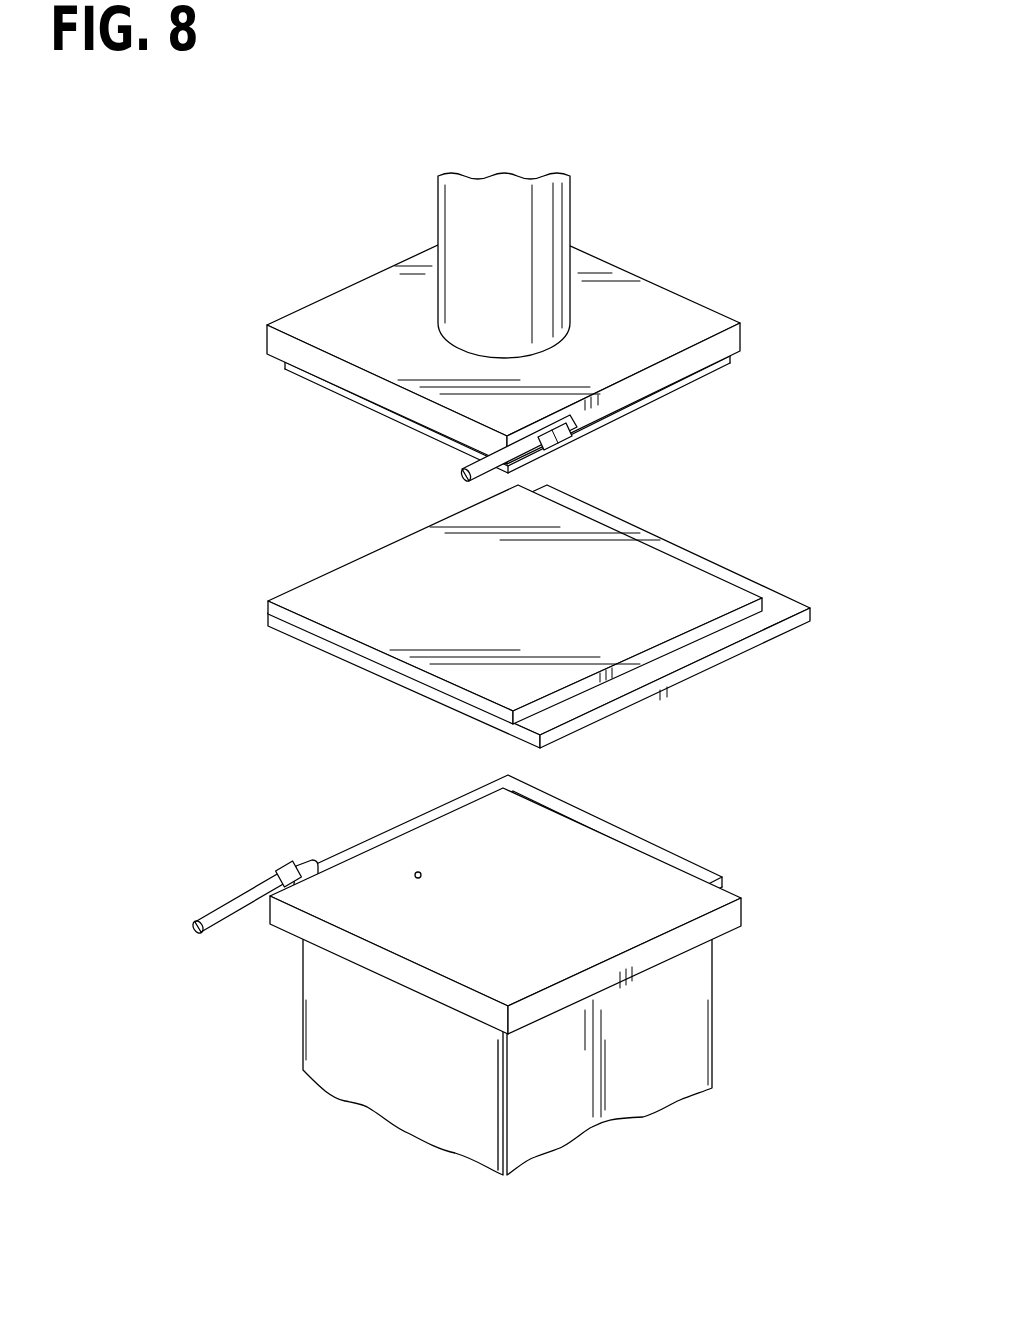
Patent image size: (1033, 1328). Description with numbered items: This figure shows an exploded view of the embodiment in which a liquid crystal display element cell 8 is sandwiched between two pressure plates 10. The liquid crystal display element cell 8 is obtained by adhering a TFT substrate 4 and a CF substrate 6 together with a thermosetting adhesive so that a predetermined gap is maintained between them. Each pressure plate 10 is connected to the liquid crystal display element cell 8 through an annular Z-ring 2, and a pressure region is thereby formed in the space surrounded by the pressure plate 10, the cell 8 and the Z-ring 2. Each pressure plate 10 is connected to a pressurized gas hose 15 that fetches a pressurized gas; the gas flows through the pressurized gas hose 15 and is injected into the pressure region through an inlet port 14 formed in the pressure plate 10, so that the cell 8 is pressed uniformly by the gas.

The Z-ring 2 is at (697, 377).
The TFT substrate 4 is at (667, 582).
The CF substrate 6 is at (720, 640).
The liquid crystal display element cell 8 is at (783, 574).
The pressure plate 10 is at (665, 308).
The inlet port 14 is at (416, 872).
The pressurized gas hose 15 is at (462, 461).